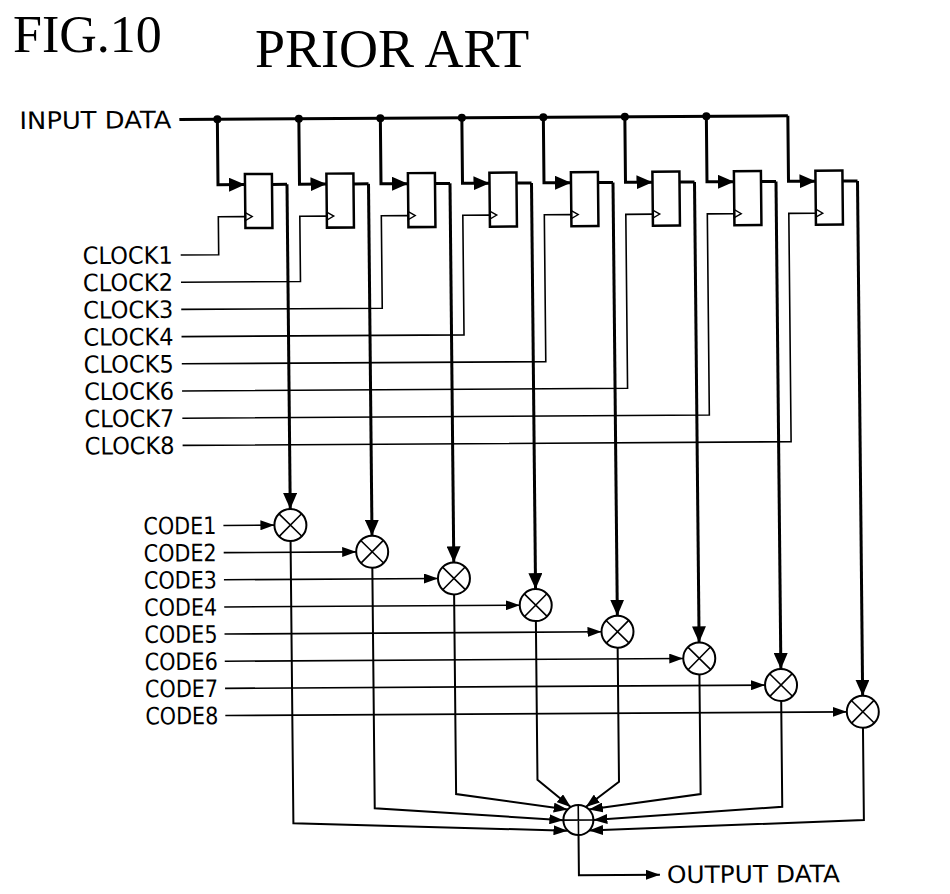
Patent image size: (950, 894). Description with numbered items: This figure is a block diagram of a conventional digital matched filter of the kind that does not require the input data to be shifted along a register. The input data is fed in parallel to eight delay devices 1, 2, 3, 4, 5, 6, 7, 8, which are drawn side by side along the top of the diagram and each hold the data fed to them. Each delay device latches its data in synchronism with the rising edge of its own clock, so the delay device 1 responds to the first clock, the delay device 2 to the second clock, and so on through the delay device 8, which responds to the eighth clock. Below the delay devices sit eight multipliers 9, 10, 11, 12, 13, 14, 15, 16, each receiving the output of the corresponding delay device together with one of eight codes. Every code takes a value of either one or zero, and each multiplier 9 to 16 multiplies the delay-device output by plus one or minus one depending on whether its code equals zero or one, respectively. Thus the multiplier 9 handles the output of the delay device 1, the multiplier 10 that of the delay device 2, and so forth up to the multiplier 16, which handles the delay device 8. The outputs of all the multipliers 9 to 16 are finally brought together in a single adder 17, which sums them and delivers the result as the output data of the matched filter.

The delay device 1 is at (258, 174).
The delay device 2 is at (340, 174).
The delay device 3 is at (421, 174).
The delay device 4 is at (502, 174).
The delay device 5 is at (584, 174).
The delay device 6 is at (666, 174).
The delay device 7 is at (747, 174).
The delay device 8 is at (828, 174).
The multiplier 9 is at (298, 514).
The multiplier 10 is at (380, 542).
The multiplier 11 is at (461, 569).
The multiplier 12 is at (543, 596).
The multiplier 13 is at (624, 623).
The multiplier 14 is at (706, 650).
The multiplier 15 is at (787, 677).
The multiplier 16 is at (869, 704).
The adder 17 is at (572, 806).